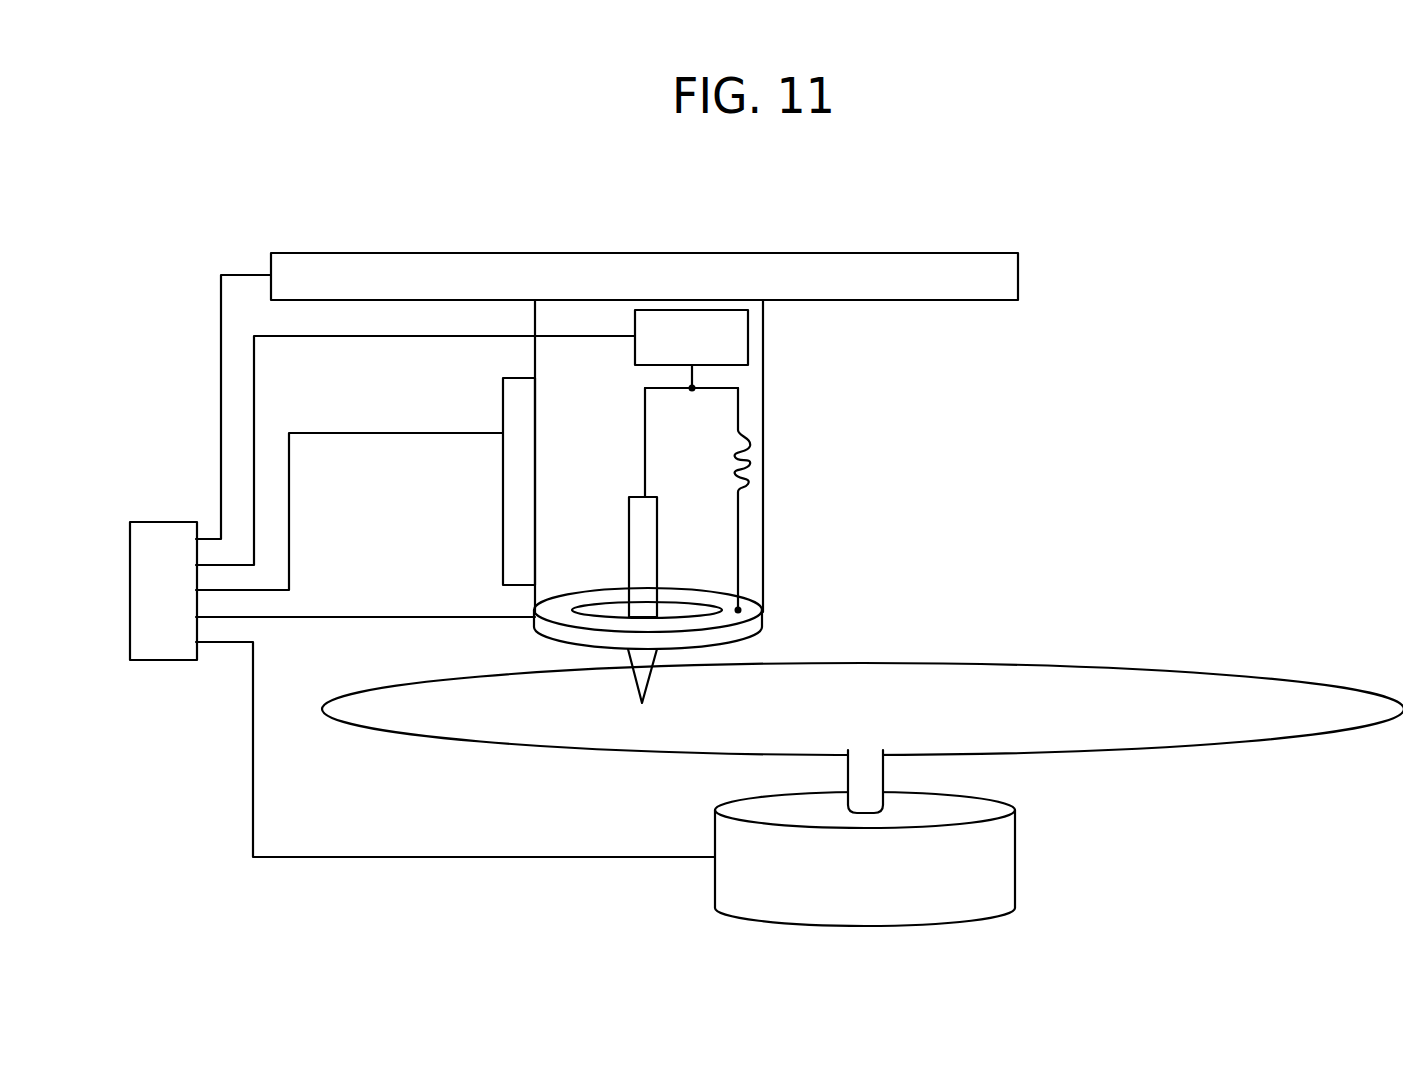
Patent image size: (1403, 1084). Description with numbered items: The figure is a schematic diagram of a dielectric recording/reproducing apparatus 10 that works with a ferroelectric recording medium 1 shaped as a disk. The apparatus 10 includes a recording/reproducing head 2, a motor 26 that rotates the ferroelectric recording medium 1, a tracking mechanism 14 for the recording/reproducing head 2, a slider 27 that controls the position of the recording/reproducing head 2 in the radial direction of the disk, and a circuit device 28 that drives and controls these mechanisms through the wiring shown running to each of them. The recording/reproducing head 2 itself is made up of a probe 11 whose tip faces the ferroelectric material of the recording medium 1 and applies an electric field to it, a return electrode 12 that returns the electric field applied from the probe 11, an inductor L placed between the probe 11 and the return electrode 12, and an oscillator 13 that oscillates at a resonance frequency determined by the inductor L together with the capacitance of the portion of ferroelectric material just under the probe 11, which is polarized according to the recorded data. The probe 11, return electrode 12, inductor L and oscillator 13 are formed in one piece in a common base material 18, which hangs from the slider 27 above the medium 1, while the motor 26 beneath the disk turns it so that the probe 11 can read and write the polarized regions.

The ferroelectric recording medium 1 is at (1114, 680).
The recording/reproducing head 2 is at (522, 317).
The dielectric recording/reproducing apparatus 10 is at (862, 203).
The probe 11 is at (648, 678).
The return electrode 12 is at (764, 623).
The oscillator 13 is at (635, 357).
The tracking mechanism 14 is at (503, 491).
The common base material 18 is at (765, 381).
The motor 26 is at (1018, 861).
The slider 27 is at (587, 253).
The circuit device 28 is at (130, 573).
The inductor L is at (725, 463).